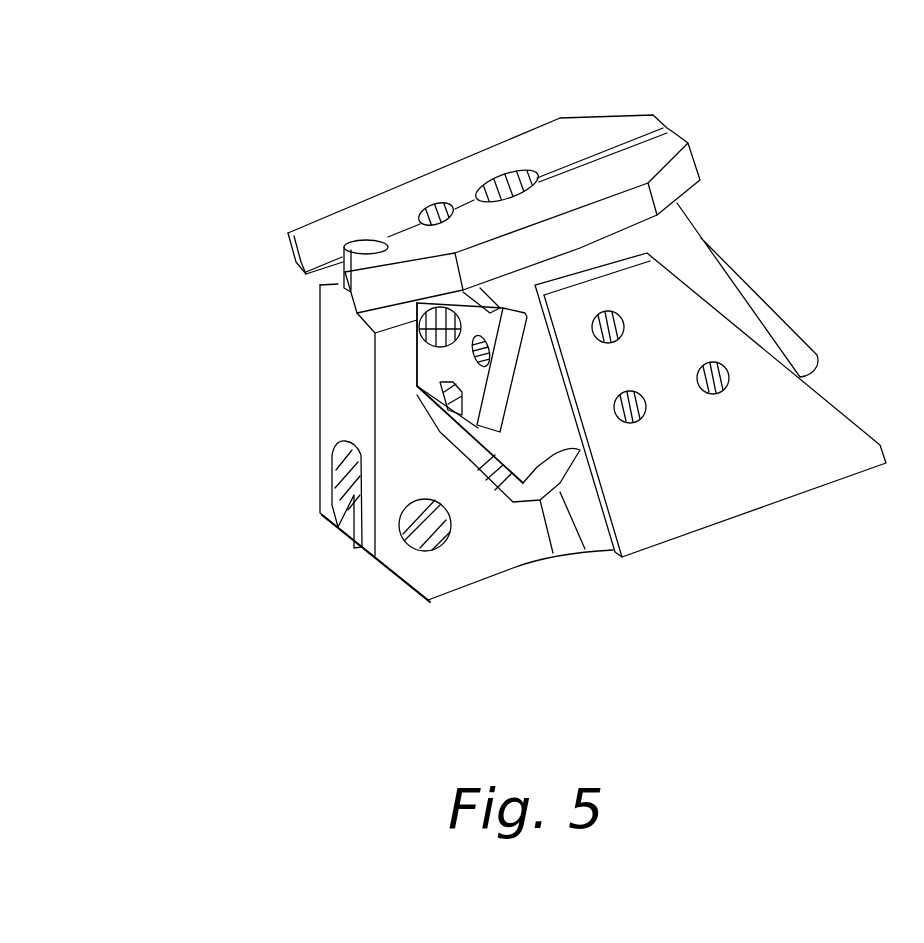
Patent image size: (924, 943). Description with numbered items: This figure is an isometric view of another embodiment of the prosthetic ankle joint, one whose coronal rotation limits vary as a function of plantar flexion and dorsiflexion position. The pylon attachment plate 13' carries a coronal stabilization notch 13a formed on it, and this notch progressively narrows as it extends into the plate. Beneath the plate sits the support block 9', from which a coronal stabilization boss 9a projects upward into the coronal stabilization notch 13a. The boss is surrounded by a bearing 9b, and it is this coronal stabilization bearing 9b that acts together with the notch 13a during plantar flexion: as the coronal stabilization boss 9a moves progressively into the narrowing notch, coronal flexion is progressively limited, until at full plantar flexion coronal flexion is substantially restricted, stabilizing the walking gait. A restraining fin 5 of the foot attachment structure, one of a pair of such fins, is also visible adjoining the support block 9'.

The pylon attachment plate 13' is at (527, 160).
The coronal stabilization notch 13a is at (312, 257).
The coronal stabilization boss 9a is at (365, 247).
The bearing 9b is at (383, 246).
The support block 9' is at (389, 443).
The restraining fin 5 is at (690, 334).